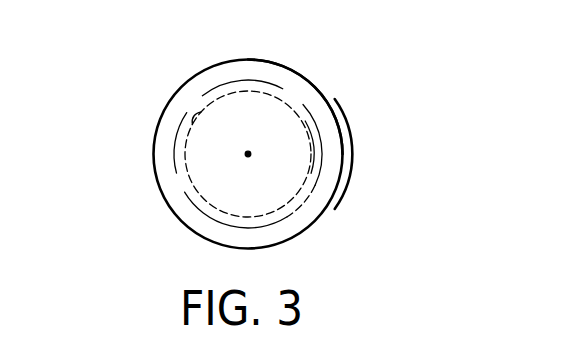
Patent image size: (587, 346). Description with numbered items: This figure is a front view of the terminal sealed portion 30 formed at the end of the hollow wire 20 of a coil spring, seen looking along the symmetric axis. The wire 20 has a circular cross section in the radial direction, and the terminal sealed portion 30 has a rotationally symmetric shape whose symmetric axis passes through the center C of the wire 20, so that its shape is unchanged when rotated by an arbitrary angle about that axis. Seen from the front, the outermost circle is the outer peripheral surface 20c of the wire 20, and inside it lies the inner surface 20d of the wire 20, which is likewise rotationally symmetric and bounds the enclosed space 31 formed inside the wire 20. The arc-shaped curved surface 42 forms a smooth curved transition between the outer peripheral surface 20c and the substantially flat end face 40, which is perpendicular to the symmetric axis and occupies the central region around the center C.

The wire 20 is at (157, 184).
The outer peripheral surface 20c is at (343, 160).
The inner surface 20d is at (196, 116).
The terminal sealed portion 30 is at (334, 70).
The enclosed space 31 is at (198, 150).
The end face 40 is at (288, 140).
The arc-shaped curved surface 42 is at (251, 70).
The center C is at (248, 154).